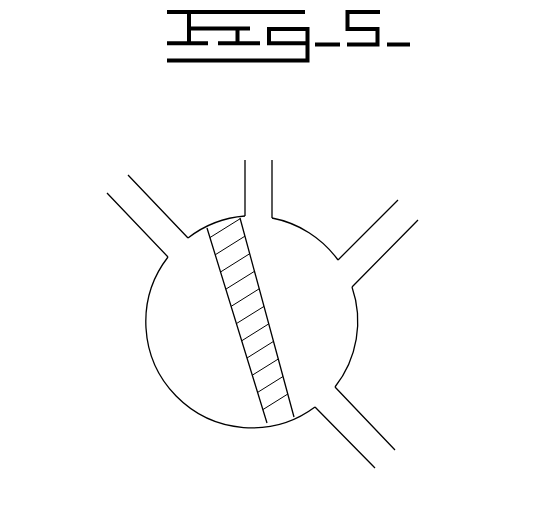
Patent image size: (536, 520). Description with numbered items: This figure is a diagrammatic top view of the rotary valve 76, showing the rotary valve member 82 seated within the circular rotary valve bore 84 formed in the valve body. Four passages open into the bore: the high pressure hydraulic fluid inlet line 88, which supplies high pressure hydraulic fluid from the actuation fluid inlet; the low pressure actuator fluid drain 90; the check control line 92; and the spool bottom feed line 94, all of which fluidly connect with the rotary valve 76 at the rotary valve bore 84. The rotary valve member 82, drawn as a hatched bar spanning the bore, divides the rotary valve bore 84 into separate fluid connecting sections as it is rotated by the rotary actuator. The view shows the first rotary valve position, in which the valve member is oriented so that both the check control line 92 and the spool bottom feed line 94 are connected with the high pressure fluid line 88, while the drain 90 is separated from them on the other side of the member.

The rotary valve 76 is at (216, 176).
The rotary valve member 82 is at (250, 360).
The rotary valve bore 84 is at (150, 355).
The high pressure hydraulic fluid inlet line 88 is at (347, 420).
The low pressure actuator fluid drain 90 is at (145, 213).
The check control line 92 is at (377, 242).
The spool bottom feed line 94 is at (260, 172).